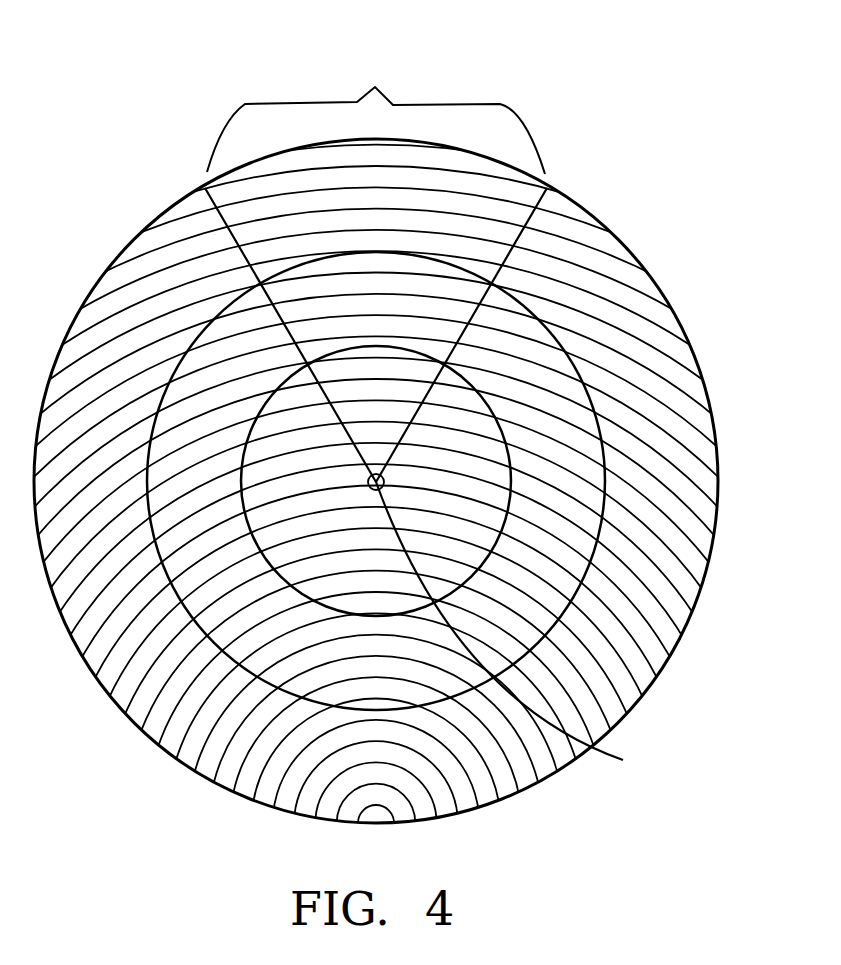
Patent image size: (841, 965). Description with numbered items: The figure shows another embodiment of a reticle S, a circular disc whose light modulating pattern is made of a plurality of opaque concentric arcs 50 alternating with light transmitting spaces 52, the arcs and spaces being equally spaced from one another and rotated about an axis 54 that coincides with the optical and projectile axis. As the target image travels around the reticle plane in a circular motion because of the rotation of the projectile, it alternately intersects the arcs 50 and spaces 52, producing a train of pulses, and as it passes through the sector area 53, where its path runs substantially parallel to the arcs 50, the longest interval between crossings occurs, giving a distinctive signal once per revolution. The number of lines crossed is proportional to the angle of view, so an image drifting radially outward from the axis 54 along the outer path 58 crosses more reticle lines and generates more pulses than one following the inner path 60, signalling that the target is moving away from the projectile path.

The opaque concentric arcs 50 is at (605, 277).
The light transmitting spaces 52 is at (643, 335).
The sector area 53 is at (375, 87).
The axis 54 is at (522, 632).
The path 58 is at (605, 458).
The path 60 is at (515, 510).
The reticle S is at (605, 153).